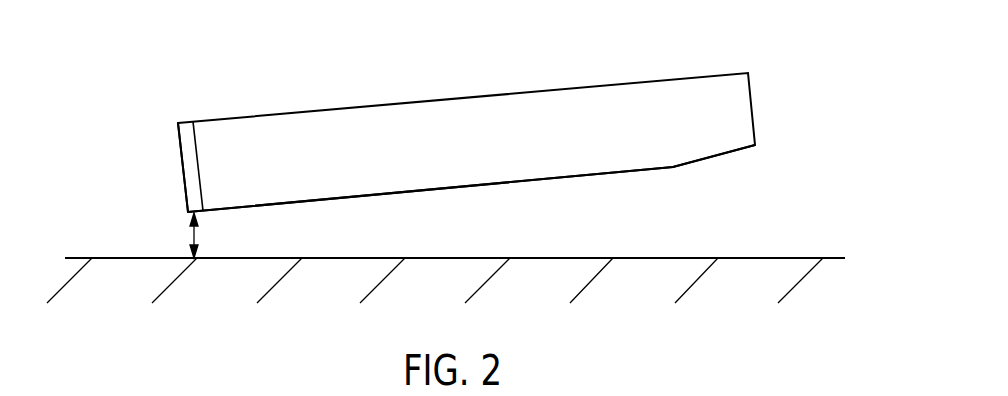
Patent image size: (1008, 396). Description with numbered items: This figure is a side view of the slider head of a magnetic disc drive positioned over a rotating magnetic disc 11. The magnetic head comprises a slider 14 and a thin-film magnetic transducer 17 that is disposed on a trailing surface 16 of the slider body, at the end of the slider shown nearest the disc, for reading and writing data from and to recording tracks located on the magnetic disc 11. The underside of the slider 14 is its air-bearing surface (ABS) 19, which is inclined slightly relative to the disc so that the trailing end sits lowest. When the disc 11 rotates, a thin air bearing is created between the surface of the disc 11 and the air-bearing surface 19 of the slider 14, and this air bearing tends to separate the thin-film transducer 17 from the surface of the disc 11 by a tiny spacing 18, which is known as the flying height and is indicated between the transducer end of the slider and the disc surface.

The rotating magnetic disc 11 is at (795, 258).
The slider 14 is at (675, 78).
The trailing surface 16 is at (201, 160).
The thin-film magnetic transducer 17 is at (182, 168).
The spacing 18 is at (200, 236).
The air-bearing surface 19 is at (528, 182).